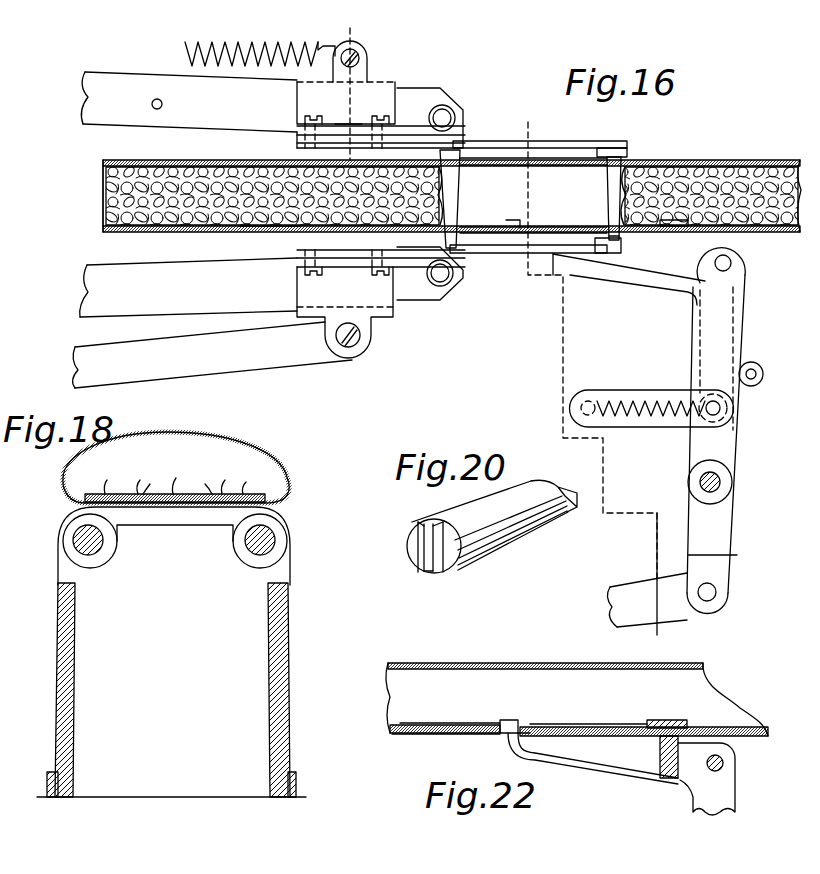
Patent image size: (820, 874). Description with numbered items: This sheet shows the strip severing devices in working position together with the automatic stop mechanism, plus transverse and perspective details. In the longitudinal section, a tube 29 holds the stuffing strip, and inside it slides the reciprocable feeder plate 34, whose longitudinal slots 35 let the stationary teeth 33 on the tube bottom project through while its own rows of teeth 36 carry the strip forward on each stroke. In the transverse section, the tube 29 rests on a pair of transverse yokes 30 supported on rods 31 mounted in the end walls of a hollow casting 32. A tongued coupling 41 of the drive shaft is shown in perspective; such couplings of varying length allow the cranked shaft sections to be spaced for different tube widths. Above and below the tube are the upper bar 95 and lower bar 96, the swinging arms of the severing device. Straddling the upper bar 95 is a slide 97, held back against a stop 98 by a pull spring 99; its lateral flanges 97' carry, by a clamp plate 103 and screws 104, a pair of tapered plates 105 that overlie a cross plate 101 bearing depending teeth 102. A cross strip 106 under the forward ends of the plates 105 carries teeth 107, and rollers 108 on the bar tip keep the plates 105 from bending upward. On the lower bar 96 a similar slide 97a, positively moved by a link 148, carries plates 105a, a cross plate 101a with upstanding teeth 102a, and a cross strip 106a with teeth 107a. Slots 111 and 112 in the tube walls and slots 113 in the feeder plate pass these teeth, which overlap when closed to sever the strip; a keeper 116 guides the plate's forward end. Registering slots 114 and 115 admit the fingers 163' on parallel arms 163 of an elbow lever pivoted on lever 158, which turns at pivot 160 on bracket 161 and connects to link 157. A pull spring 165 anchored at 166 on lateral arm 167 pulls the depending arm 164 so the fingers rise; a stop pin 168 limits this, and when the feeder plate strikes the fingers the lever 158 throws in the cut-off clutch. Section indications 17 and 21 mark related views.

In FIG. 16, the section line 17- 17 is at (560, 115).
In FIG. 16, the section line 21- 21 is at (372, 30).
In FIG. 16, the tube 29 is at (173, 160).
In FIG. 18, the tube 29 is at (218, 437).
In FIG. 22, the tube 29 is at (445, 656).
In FIG. 18, the transverse yokes 30 is at (172, 518).
In FIG. 18, the rods 31 is at (78, 541).
In FIG. 18, the hollow casting 32 is at (103, 602).
In FIG. 18, the teeth 33 is at (151, 484).
In FIG. 16, the feeder plate 34 is at (103, 200).
In FIG. 18, the feeder plate 34 is at (85, 494).
In FIG. 22, the feeder plate 34 is at (420, 733).
In FIG. 18, the longitudinal slots 35 is at (140, 479).
In FIG. 16, the teeth 36 is at (270, 233).
In FIG. 18, the teeth 36 is at (107, 479).
In FIG. 20, the tongued coupling 41 is at (498, 552).
In FIG. 16, the upper bar 95 is at (103, 102).
In FIG. 16, the lower bar 96 is at (118, 280).
In FIG. 16, the slide 97 is at (357, 94).
In FIG. 16, the lateral flanges 97' is at (340, 107).
In FIG. 16, the slide 97a is at (365, 295).
In FIG. 16, the stop 98 is at (156, 99).
In FIG. 16, the pull spring 99 is at (185, 42).
In FIG. 16, the cross plate 101 is at (452, 143).
In FIG. 16, the cross plate 101a is at (456, 237).
In FIG. 16, the depending teeth 102 is at (456, 160).
In FIG. 16, the upstanding teeth 102a is at (466, 256).
In FIG. 16, the clamp plate 103 is at (300, 136).
In FIG. 16, the screws 104 is at (297, 90).
In FIG. 16, the tapered plates 105 is at (583, 147).
In FIG. 16, the plates 105a is at (553, 272).
In FIG. 16, the cross strip 106 is at (620, 155).
In FIG. 16, the cross strip 106a is at (602, 253).
In FIG. 16, the teeth 107 is at (606, 179).
In FIG. 16, the upstanding teeth 107a is at (608, 208).
In FIG. 16, the rollers 108 is at (448, 108).
In FIG. 16, the longitudinal slot 111 is at (545, 157).
In FIG. 16, the longitudinal slot 112 is at (478, 230).
In FIG. 16, the slots 113 is at (485, 235).
In FIG. 22, the slot 114 is at (497, 737).
In FIG. 22, the slot 115 is at (545, 727).
In FIG. 16, the keeper 116 is at (673, 222).
In FIG. 22, the keeper 116 is at (668, 713).
In FIG. 16, the link 148 is at (240, 362).
In FIG. 16, the link 157 is at (613, 587).
In FIG. 16, the lever 158 is at (730, 445).
In FIG. 16, the pivot 160 is at (722, 485).
In FIG. 16, the bracket 161 is at (728, 266).
In FIG. 22, the bracket 161 is at (723, 765).
In FIG. 16, the parallel arms 163 is at (629, 287).
In FIG. 22, the parallel arms 163 is at (593, 767).
In FIG. 16, the upstanding fingers 163' is at (516, 197).
In FIG. 22, the upstanding fingers 163' is at (504, 708).
In FIG. 16, the depending arm 164 is at (698, 362).
In FIG. 16, the pull spring 165 is at (643, 427).
In FIG. 16, the anchor 166 is at (590, 400).
In FIG. 16, the lateral arm 167 is at (645, 400).
In FIG. 16, the stop pin 168 is at (753, 375).